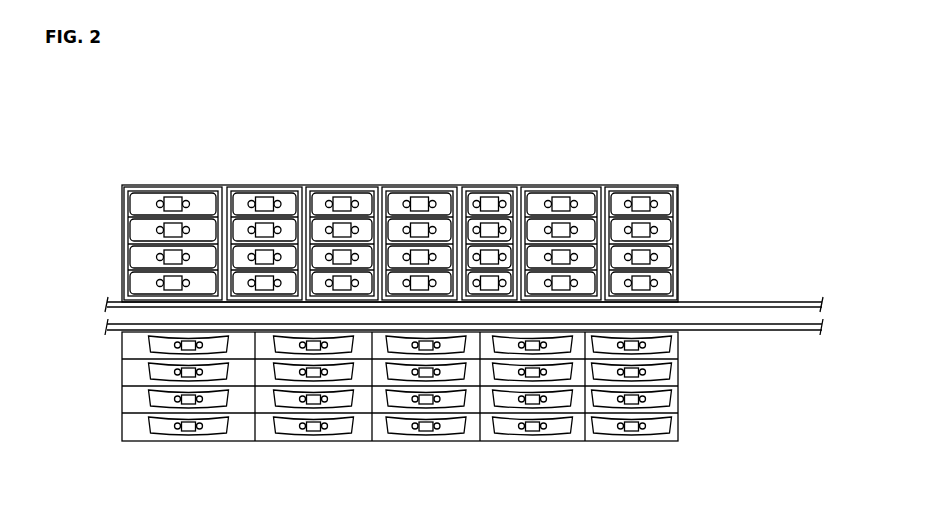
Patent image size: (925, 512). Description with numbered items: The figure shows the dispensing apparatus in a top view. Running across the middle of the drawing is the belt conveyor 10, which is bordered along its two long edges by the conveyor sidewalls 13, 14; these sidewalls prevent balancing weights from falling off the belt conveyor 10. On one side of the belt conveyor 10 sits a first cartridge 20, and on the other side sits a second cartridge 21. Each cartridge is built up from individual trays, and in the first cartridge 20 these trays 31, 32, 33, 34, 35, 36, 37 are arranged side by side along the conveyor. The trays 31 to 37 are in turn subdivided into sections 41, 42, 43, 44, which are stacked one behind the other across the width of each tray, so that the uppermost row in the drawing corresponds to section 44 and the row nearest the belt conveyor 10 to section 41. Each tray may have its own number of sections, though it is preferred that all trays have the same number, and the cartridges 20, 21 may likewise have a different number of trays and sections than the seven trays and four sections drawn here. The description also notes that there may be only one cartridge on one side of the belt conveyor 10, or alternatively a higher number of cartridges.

The belt conveyor 10 is at (744, 316).
The conveyor sidewall 13 is at (792, 301).
The conveyor sidewall 14 is at (794, 331).
The first cartridge 20 is at (704, 175).
The second cartridge 21 is at (706, 441).
The tray 31 is at (641, 161).
The tray 32 is at (559, 161).
The tray 33 is at (486, 161).
The tray 34 is at (416, 161).
The tray 35 is at (339, 161).
The tray 36 is at (256, 161).
The tray 37 is at (181, 161).
The section 41 is at (679, 285).
The section 42 is at (679, 257).
The section 43 is at (679, 230).
The section 44 is at (679, 202).